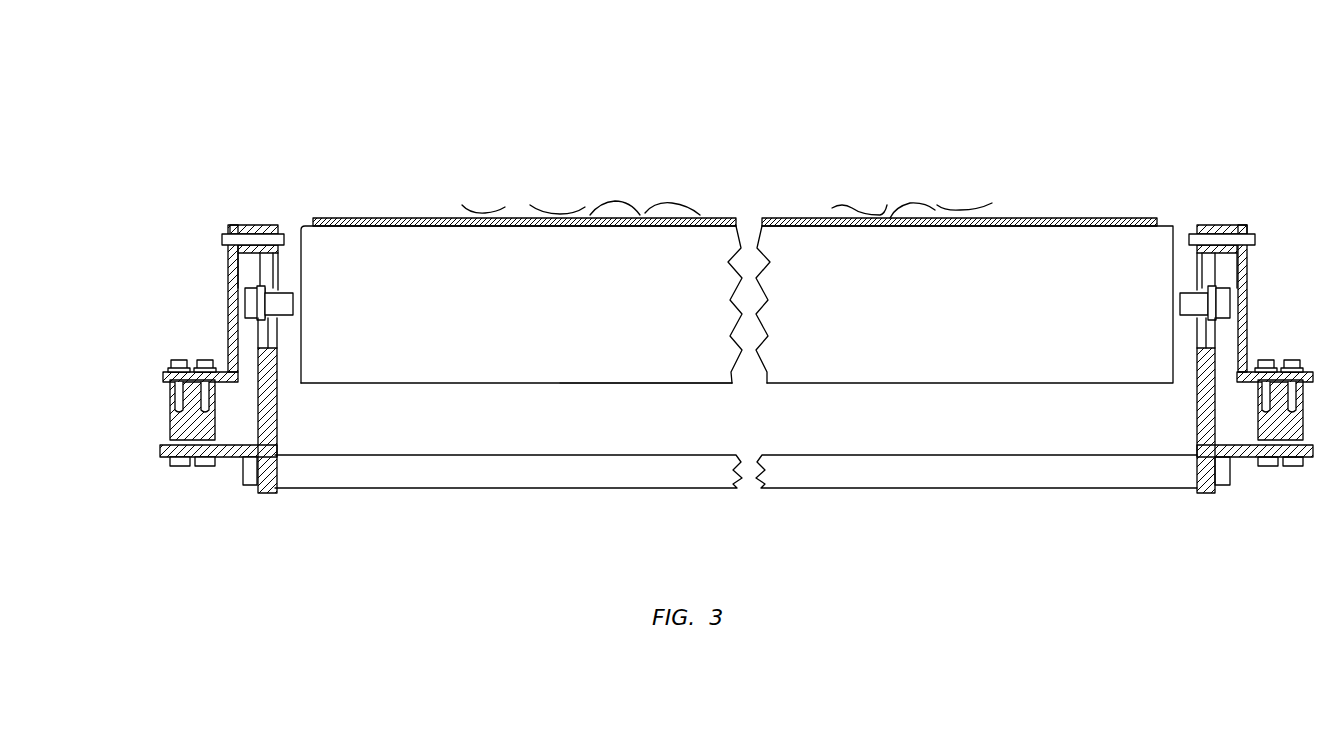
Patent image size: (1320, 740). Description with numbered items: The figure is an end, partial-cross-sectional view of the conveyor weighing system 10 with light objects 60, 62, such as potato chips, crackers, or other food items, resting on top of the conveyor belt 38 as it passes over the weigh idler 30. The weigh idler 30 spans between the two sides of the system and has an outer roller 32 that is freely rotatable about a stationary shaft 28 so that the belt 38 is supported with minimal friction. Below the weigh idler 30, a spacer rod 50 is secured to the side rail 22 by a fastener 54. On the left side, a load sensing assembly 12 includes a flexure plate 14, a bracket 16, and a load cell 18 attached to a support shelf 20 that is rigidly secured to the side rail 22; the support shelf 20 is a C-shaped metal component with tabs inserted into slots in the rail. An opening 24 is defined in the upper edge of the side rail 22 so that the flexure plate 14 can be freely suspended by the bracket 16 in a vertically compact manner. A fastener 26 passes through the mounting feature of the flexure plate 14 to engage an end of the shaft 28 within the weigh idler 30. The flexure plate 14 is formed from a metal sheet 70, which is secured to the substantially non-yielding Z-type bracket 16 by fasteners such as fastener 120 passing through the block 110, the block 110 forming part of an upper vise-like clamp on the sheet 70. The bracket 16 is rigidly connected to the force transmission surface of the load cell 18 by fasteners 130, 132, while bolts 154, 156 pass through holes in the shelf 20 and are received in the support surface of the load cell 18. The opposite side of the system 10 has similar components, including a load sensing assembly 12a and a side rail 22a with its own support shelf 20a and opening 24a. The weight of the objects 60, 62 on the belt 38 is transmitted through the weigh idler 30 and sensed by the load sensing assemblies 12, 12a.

The system 10 is at (538, 58).
The load sensing assembly 12 is at (231, 138).
The load sensing assembly 12a is at (1220, 195).
The flexure plate 14 is at (283, 273).
The bracket 16 is at (228, 265).
The load cell 18 is at (172, 415).
The support shelf 20 is at (227, 460).
The support shelf 20a is at (1236, 460).
The side rail 22 is at (270, 495).
The side rail 22a is at (1204, 497).
The opening 24 is at (262, 335).
The opening 24a is at (1200, 334).
The fastener 26 is at (250, 293).
The shaft 28 is at (293, 318).
The weigh idler 30 is at (918, 397).
The outer roller 32 is at (560, 370).
The conveyor belt 38 is at (1058, 218).
The spacer rod 50 is at (922, 497).
The fastener 54 is at (247, 487).
The object 60 is at (580, 195).
The object 62 is at (908, 190).
The metal sheet 70 is at (272, 265).
The block 110 is at (246, 224).
The fastener 120 is at (285, 225).
The fastener 130 is at (170, 357).
The fastener 132 is at (207, 360).
The bolt 154 is at (170, 467).
The bolt 156 is at (200, 470).